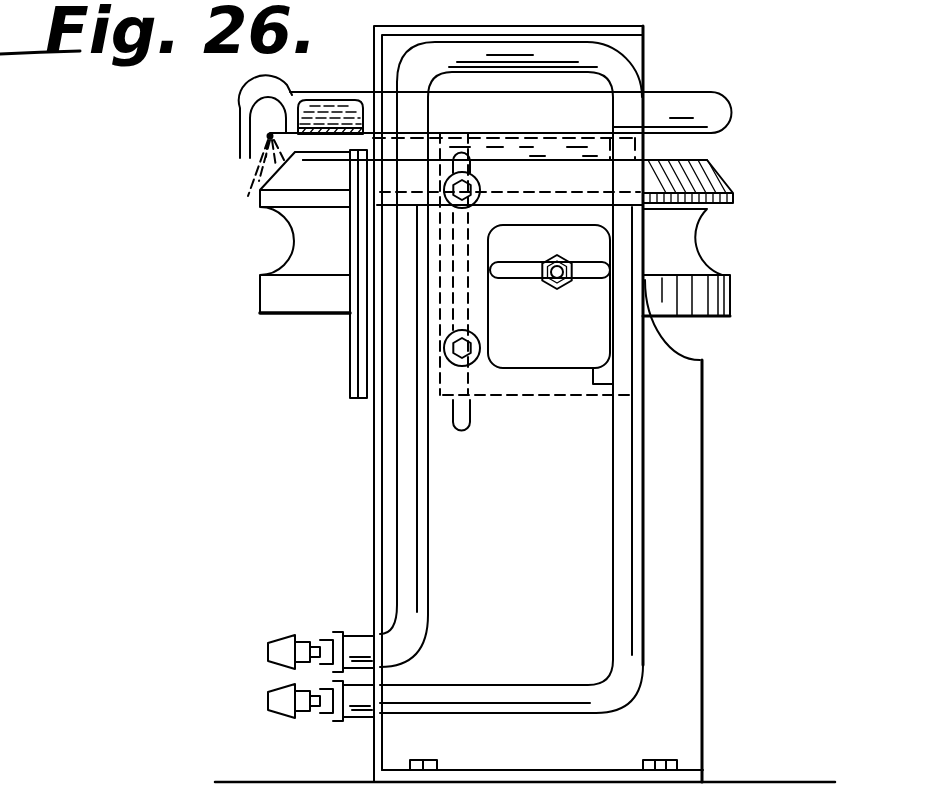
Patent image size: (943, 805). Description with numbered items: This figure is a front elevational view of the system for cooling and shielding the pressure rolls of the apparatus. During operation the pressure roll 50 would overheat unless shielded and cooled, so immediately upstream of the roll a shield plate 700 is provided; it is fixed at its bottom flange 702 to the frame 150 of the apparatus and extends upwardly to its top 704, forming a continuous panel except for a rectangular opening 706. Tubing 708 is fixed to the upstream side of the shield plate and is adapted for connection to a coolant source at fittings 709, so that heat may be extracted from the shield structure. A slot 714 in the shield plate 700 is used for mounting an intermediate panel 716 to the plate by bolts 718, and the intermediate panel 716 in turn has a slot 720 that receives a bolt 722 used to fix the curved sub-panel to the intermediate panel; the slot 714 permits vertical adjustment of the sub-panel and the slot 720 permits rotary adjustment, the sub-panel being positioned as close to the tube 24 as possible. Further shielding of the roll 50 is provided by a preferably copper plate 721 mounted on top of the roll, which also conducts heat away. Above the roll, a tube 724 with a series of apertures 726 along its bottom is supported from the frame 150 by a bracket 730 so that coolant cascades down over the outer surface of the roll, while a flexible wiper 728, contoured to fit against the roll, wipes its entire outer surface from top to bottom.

The top of shield plate 704 is at (627, 32).
The tubing 708 is at (612, 548).
The tube 724 is at (330, 66).
The bracket 730 is at (248, 90).
The apertures 726 is at (266, 137).
The slot 714 is at (452, 290).
The bolts 718 is at (537, 114).
The wiper 728 is at (363, 243).
The pressure roll 50 is at (262, 316).
The plate 721 is at (707, 158).
The tube 24 is at (763, 228).
The rectangular opening 706 is at (612, 388).
The shield plate 700 is at (693, 622).
The bottom flange 702 is at (579, 755).
The frame 150 is at (785, 782).
The fittings 709 is at (268, 701).
The intermediate panel 716 is at (581, 333).
The slot 720 is at (534, 282).
The bolt 722 is at (596, 246).